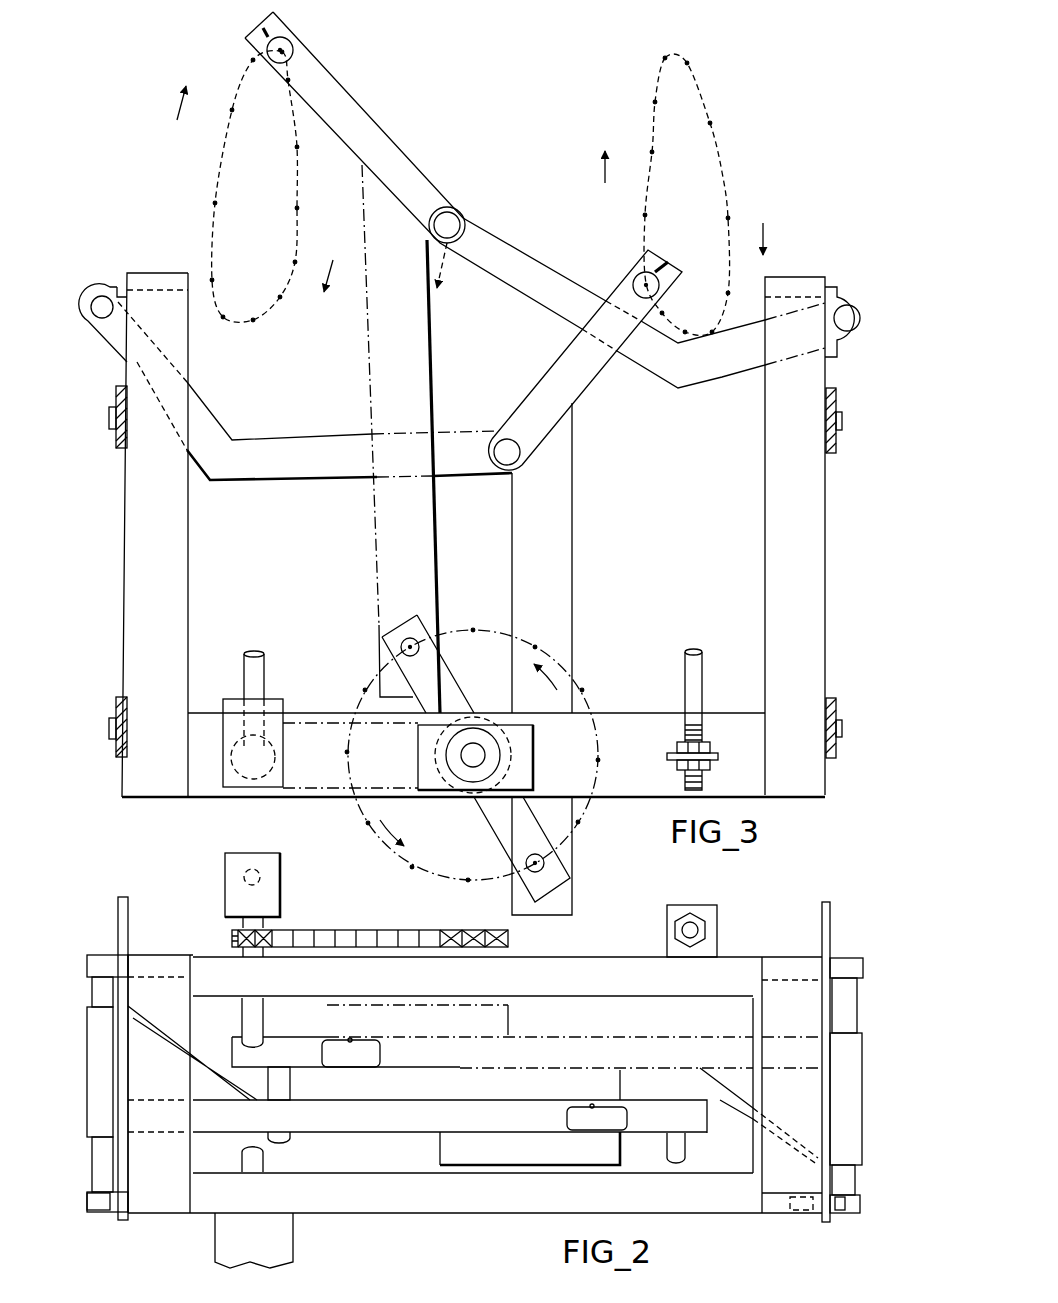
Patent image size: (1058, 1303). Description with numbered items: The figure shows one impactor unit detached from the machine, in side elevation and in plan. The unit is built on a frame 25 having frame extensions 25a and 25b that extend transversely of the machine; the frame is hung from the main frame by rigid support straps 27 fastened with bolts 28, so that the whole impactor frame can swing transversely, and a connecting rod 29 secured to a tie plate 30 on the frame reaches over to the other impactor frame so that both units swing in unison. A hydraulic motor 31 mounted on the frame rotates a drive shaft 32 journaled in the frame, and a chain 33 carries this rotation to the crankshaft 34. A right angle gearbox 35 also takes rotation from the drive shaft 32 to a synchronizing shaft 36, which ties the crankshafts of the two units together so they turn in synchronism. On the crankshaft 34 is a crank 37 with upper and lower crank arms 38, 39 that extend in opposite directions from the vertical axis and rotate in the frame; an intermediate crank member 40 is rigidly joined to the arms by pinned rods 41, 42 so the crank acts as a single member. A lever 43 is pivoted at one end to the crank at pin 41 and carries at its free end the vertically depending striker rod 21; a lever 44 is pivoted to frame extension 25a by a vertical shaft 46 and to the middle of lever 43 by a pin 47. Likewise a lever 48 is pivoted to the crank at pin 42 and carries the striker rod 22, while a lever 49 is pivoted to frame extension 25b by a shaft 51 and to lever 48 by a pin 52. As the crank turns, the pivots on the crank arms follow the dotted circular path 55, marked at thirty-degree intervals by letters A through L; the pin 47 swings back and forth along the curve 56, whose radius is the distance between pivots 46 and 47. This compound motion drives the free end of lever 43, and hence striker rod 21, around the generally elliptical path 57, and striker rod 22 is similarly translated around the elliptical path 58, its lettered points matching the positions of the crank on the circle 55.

In FIG. 3, the striker rod 21 is at (292, 47).
In FIG. 2, the striker rod 21 is at (270, 1090).
In FIG. 3, the striker rod 22 is at (641, 272).
In FIG. 2, the striker rod 22 is at (684, 1152).
In FIG. 3, the frame 25 is at (158, 812).
In FIG. 2, the frame 25 is at (488, 1222).
In FIG. 3, the frame extension 25a is at (826, 555).
In FIG. 2, the frame extension 25a is at (798, 945).
In FIG. 3, the frame extension 25b is at (131, 555).
In FIG. 2, the frame extension 25b is at (168, 955).
In FIG. 3, the rigid support strap 27 is at (116, 440).
In FIG. 2, the rigid support strap 27 is at (117, 917).
In FIG. 3, the bolt 28 is at (110, 410).
In FIG. 2, the bolt 28 is at (107, 1212).
In FIG. 3, the connecting rod 29 is at (702, 668).
In FIG. 2, the connecting rod 29 is at (688, 913).
In FIG. 3, the tie plate 30 is at (718, 757).
In FIG. 2, the tie plate 30 is at (667, 928).
In FIG. 2, the hydraulic motor 31 is at (262, 1251).
In FIG. 2, the drive shaft 32 is at (261, 1040).
In FIG. 2, the chain 33 is at (342, 937).
In FIG. 2, the crankshaft 34 is at (493, 995).
In FIG. 3, the right angle gearbox 35 is at (280, 699).
In FIG. 2, the right angle gearbox 35 is at (282, 883).
In FIG. 3, the synchronizing shaft 36 is at (243, 660).
In FIG. 2, the synchronizing shaft 36 is at (260, 868).
In FIG. 2, the crank 37 is at (512, 1011).
In FIG. 3, the upper crank arm 38 is at (455, 682).
In FIG. 2, the upper crank arm 38 is at (349, 1052).
In FIG. 3, the lower crank arm 39 is at (495, 833).
In FIG. 2, the lower crank arm 39 is at (525, 1134).
In FIG. 2, the intermediate crank member 40 is at (532, 1072).
In FIG. 3, the pinned rod 41 is at (403, 642).
In FIG. 2, the pinned rod 41 is at (350, 1040).
In FIG. 3, the pinned rod 42 is at (545, 863).
In FIG. 2, the pinned rod 42 is at (592, 1105).
In FIG. 3, the lever 43 is at (436, 390).
In FIG. 2, the lever 43 is at (381, 1053).
In FIG. 3, the lever 44 is at (648, 372).
In FIG. 2, the lever 44 is at (592, 1040).
In FIG. 3, the vertical shaft 46 is at (852, 306).
In FIG. 2, the vertical shaft 46 is at (853, 1015).
In FIG. 3, the pin 47 is at (452, 222).
In FIG. 3, the lever 48 is at (575, 558).
In FIG. 2, the lever 48 is at (622, 1120).
In FIG. 3, the lever 49 is at (291, 435).
In FIG. 2, the lever 49 is at (382, 1110).
In FIG. 3, the shaft 51 is at (100, 298).
In FIG. 2, the shaft 51 is at (97, 995).
In FIG. 3, the pin 52 is at (505, 465).
In FIG. 3, the circular path 55 is at (600, 717).
In FIG. 3, the curve 56 is at (437, 265).
In FIG. 3, the elliptical path 57 is at (222, 158).
In FIG. 3, the elliptical path 58 is at (722, 172).